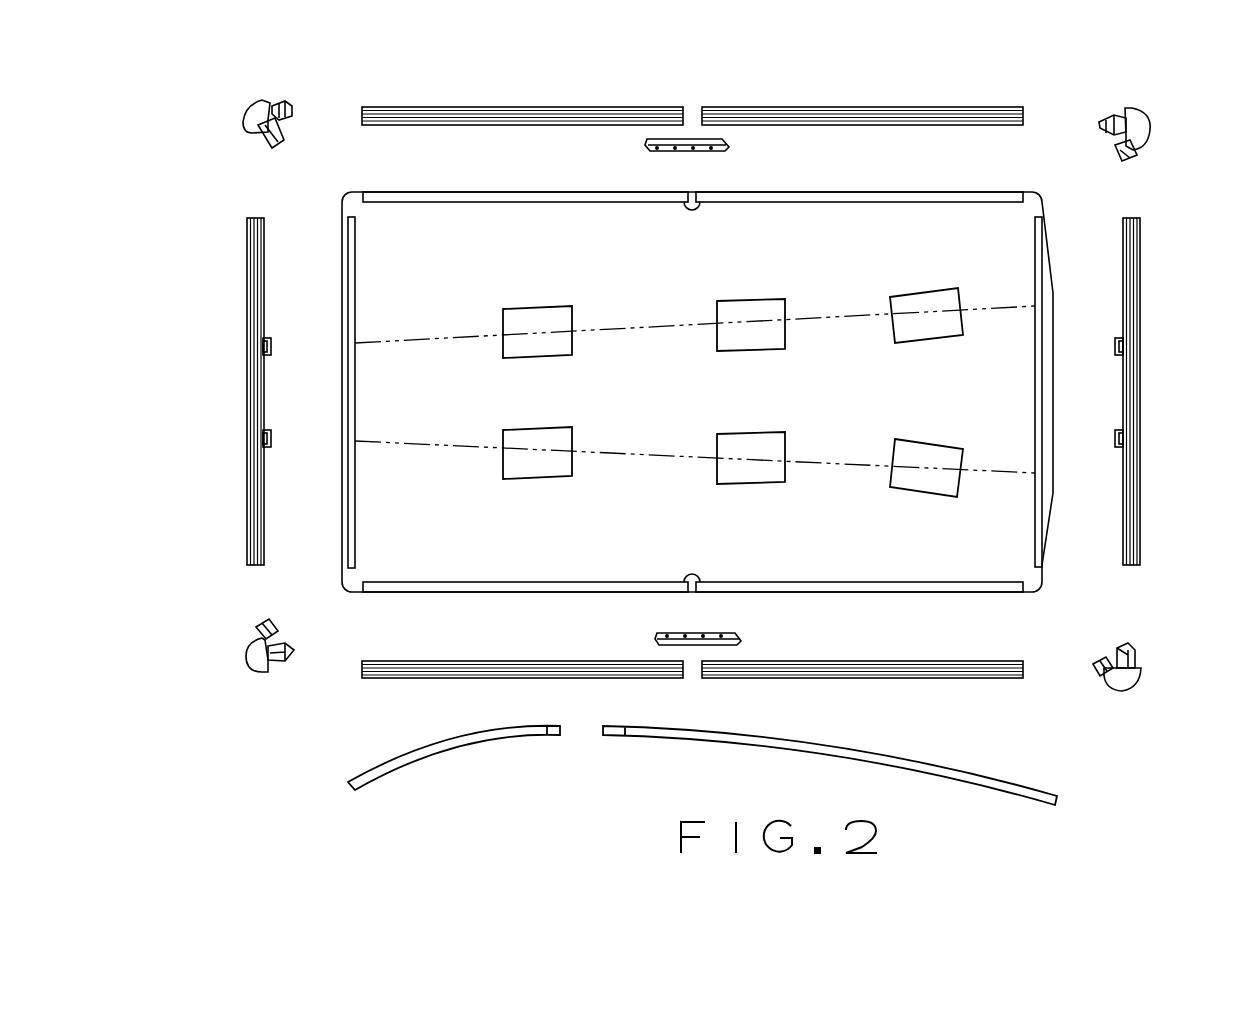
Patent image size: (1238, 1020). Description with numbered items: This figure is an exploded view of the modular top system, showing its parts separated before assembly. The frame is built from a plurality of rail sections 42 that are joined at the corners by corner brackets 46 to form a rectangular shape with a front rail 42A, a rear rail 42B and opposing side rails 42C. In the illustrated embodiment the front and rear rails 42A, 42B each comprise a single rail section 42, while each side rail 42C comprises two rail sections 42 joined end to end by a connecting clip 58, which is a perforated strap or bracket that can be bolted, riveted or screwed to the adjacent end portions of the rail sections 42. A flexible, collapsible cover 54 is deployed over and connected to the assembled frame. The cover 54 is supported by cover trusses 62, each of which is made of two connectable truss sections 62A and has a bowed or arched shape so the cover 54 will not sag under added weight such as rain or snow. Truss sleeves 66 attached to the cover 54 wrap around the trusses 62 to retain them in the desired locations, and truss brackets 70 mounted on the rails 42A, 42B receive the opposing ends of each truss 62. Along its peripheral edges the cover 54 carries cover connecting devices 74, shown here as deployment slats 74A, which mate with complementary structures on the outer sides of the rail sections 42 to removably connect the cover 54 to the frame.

The rail section 42 is at (546, 107).
The front rail 42A is at (240, 397).
The rear rail 42B is at (1153, 316).
The side rail 42C is at (742, 101).
The corner bracket 46 is at (262, 100).
The cover 54 is at (687, 404).
The connecting clip 58 is at (727, 147).
The cover truss 62 is at (535, 748).
The truss section 62A is at (425, 752).
The truss sleeve 66 is at (527, 322).
The truss bracket 70 is at (272, 345).
The cover connecting device 74 is at (357, 311).
The deployment slat 74A is at (477, 202).